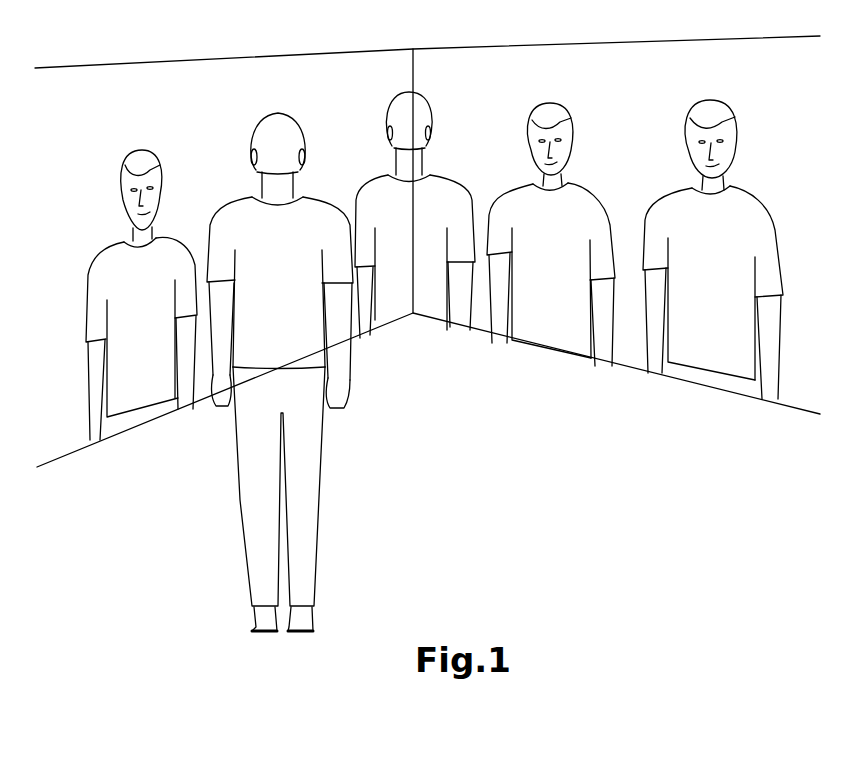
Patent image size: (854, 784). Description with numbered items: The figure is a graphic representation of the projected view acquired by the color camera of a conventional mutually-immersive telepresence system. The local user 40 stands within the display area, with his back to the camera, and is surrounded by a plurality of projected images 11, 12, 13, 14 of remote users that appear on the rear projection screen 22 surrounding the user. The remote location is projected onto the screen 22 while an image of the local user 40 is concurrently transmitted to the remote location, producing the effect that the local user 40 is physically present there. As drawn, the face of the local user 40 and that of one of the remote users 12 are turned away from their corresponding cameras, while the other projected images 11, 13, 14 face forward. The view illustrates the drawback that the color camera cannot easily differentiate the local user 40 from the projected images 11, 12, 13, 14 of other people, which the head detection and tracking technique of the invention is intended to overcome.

The rear projection screen 22 is at (241, 52).
The projected image 11 is at (148, 150).
The projected image of remote user 12 is at (420, 93).
The projected image 13 is at (557, 103).
The projected image 14 is at (717, 98).
The local user 40 is at (278, 113).